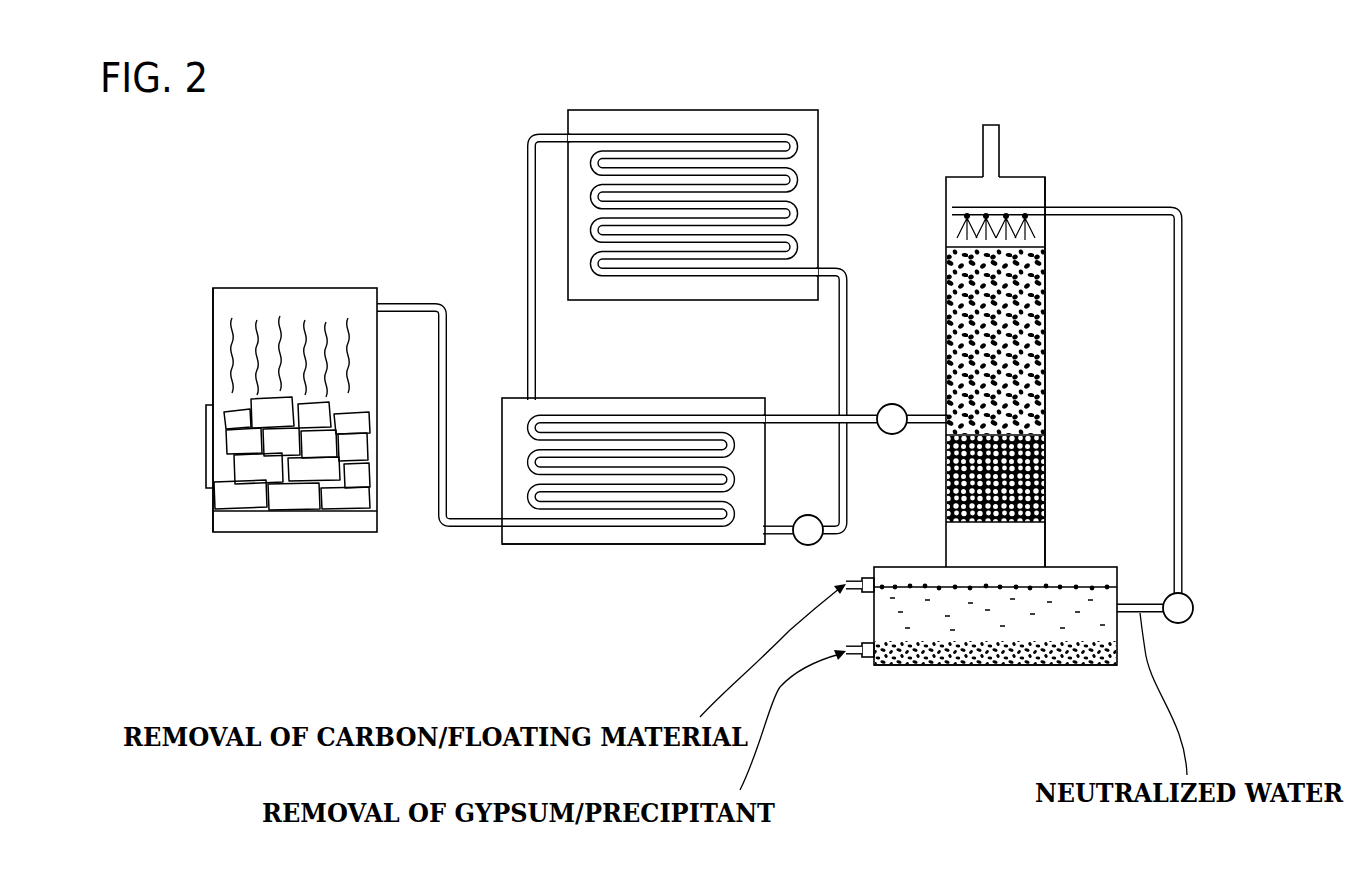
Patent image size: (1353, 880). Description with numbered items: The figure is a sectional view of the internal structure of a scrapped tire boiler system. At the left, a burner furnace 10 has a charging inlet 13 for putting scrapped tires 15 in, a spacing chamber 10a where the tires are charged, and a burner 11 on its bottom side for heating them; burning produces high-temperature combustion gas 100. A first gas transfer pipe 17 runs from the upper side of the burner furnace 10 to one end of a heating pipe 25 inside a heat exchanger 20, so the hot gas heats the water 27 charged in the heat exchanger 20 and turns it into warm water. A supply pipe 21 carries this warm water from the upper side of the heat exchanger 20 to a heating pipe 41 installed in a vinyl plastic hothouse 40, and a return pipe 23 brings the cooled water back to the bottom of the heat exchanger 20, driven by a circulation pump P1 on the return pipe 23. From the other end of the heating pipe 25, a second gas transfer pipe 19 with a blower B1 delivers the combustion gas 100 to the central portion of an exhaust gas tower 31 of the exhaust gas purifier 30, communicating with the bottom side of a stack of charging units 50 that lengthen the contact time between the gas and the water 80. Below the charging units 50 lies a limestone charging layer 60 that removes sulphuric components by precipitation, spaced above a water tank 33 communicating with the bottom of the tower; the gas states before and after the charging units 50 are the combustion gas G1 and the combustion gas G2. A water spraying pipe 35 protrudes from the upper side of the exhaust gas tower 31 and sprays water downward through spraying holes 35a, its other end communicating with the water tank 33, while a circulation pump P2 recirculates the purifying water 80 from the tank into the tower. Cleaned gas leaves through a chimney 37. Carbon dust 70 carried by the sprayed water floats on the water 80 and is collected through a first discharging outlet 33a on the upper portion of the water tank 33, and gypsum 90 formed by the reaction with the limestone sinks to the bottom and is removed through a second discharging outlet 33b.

The burner furnace 10 is at (278, 276).
The spacing chamber 10a is at (213, 330).
The combustion gas 100 is at (285, 334).
The burner 11 is at (262, 523).
The charging inlet 13 is at (206, 440).
The scrapped tires 15 is at (303, 500).
The first gas transfer pipe 17 is at (433, 468).
The second gas transfer pipe 19 is at (866, 422).
The heat exchanger 20 is at (520, 552).
The supply pipe 21 is at (527, 252).
The return pipe 23 is at (842, 340).
The heating pipe 25 is at (657, 506).
The water 27 is at (585, 538).
The exhaust gas purifier 30 is at (935, 225).
The exhaust gas tower 31 is at (1046, 385).
The water tank 33 is at (922, 667).
The first discharging outlet 33a is at (867, 577).
The second discharging outlet 33b is at (857, 656).
The water spraying pipe 35 is at (1123, 208).
The spraying holes 35a is at (1028, 213).
The chimney 37 is at (997, 140).
The vinyl plastic hothouse 40 is at (765, 100).
The heating pipe 41 is at (686, 156).
The charging units 50 is at (1043, 322).
The limestone charging layer 60 is at (1044, 463).
The carbon dust 70 is at (1072, 587).
The water 80 is at (1100, 626).
The gypsum 90 is at (1037, 667).
The blower B1 is at (889, 403).
The circulation pump P1 is at (800, 546).
The circulation pump P2 is at (1190, 622).
The combustion gas before passing through the charging units G1 is at (1044, 433).
The combustion gas after having passed through the charging units G2 is at (1042, 244).